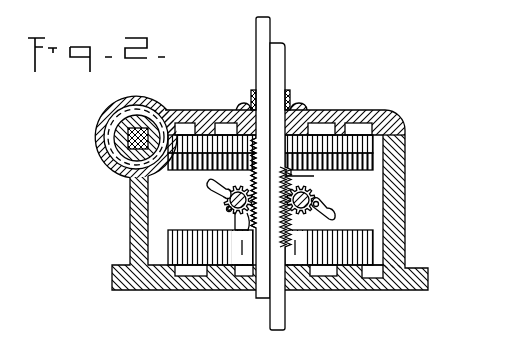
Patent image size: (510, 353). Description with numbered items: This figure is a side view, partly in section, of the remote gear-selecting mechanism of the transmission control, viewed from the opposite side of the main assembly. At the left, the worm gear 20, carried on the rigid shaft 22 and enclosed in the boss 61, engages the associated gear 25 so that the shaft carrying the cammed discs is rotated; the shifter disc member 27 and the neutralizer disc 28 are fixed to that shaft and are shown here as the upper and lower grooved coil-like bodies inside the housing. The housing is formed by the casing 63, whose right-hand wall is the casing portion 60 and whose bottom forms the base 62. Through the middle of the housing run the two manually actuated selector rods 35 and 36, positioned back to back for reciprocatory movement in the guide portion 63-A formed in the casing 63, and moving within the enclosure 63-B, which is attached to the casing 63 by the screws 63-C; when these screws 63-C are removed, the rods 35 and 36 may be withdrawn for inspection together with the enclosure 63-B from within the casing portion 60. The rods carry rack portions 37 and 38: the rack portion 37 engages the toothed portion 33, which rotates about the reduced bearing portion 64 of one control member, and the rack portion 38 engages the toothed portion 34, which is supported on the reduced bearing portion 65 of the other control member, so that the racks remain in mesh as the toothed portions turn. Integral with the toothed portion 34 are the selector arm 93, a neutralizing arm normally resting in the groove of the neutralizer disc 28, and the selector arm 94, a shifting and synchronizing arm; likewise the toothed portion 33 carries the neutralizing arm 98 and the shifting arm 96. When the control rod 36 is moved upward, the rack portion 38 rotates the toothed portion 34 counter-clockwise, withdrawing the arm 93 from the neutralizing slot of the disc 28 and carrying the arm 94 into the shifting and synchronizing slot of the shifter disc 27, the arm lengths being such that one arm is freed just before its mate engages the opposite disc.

The bearing boss 61 is at (135, 100).
The rigid shaft 22 is at (113, 143).
The worm gear 20 is at (122, 167).
The screws 63-C is at (240, 105).
The selector rod 36 is at (262, 77).
The selector rod 35 is at (277, 80).
The enclosure 63-B is at (290, 103).
The guide portion 63-A is at (309, 105).
The gear 25 is at (350, 127).
The casing 63 is at (401, 122).
The neutralizer disc 28 is at (370, 161).
The selector arm 93 is at (209, 185).
The rack portion 38 is at (255, 172).
The toothed portion 34 is at (228, 204).
The reduced bearing portion 64 is at (226, 210).
The selector arm 94 is at (235, 225).
The selector arm 98 is at (310, 176).
The toothed portion 33 is at (316, 198).
The reduced bearing portion 65 is at (319, 204).
The selector arm 96 is at (332, 218).
The rack portion 37 is at (283, 232).
The casing portion 60 is at (395, 218).
The shifter disc member 27 is at (362, 246).
The housing base 62 is at (325, 290).